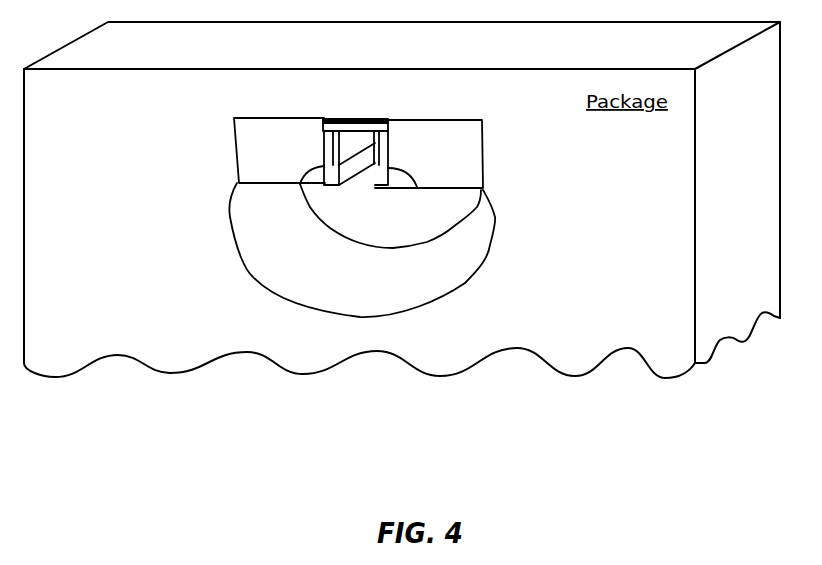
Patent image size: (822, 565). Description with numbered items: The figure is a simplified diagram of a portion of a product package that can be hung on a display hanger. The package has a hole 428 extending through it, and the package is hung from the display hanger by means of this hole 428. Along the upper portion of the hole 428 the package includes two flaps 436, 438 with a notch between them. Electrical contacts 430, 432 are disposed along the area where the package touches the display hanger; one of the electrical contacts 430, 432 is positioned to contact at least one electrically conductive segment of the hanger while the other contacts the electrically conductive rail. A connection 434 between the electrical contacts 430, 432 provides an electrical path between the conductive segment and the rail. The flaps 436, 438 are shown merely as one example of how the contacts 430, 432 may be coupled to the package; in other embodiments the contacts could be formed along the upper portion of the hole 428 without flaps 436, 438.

The hole 428 is at (433, 287).
The electrical contact 430 is at (320, 178).
The electrical contact 432 is at (387, 178).
The connection 434 is at (363, 123).
The flap 436 is at (255, 130).
The flap 438 is at (463, 137).